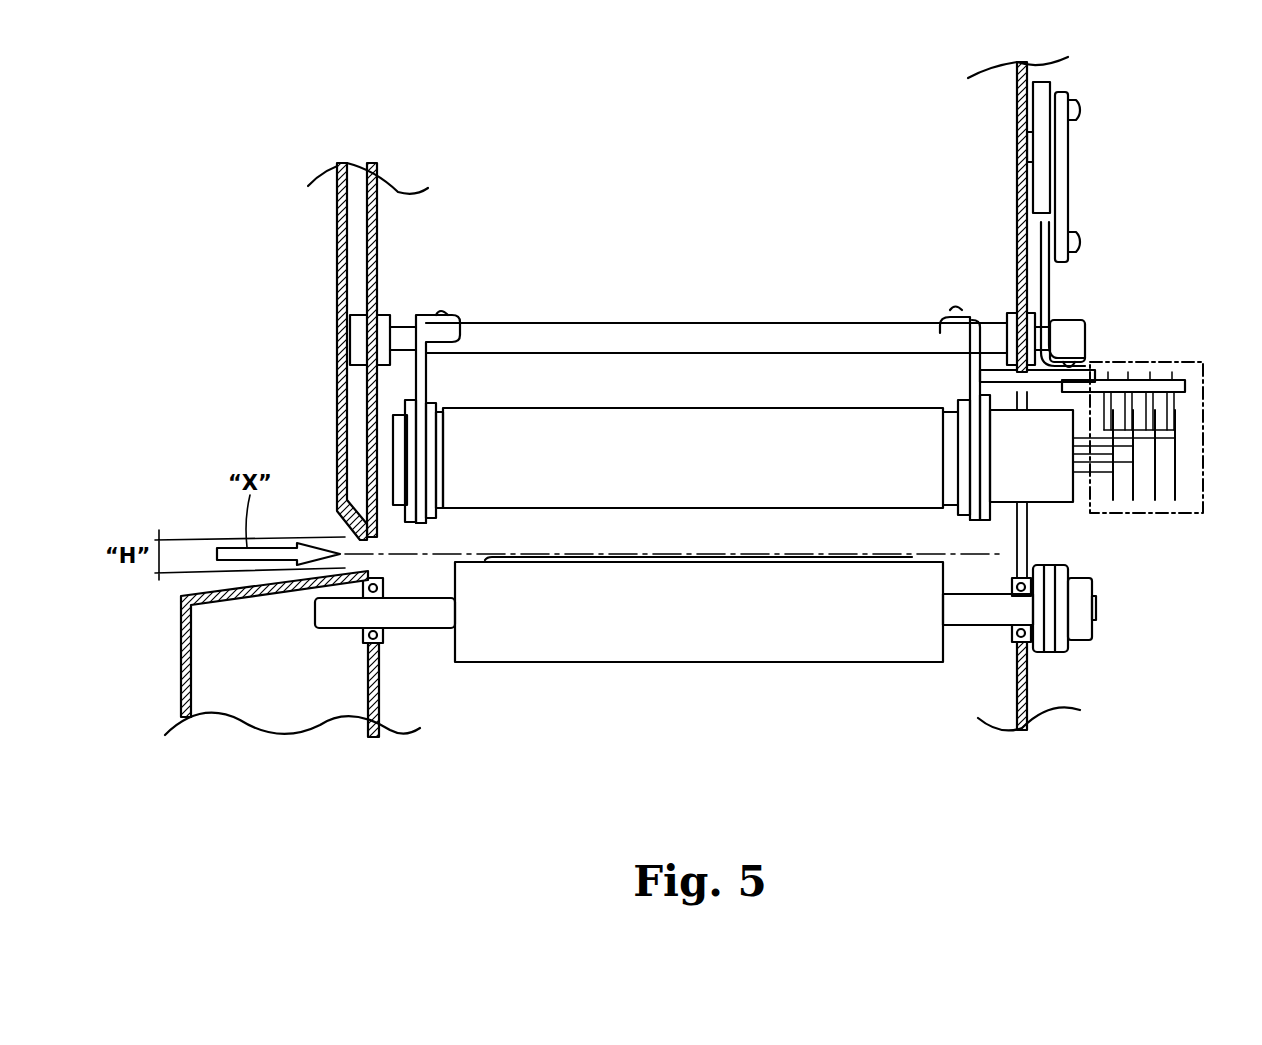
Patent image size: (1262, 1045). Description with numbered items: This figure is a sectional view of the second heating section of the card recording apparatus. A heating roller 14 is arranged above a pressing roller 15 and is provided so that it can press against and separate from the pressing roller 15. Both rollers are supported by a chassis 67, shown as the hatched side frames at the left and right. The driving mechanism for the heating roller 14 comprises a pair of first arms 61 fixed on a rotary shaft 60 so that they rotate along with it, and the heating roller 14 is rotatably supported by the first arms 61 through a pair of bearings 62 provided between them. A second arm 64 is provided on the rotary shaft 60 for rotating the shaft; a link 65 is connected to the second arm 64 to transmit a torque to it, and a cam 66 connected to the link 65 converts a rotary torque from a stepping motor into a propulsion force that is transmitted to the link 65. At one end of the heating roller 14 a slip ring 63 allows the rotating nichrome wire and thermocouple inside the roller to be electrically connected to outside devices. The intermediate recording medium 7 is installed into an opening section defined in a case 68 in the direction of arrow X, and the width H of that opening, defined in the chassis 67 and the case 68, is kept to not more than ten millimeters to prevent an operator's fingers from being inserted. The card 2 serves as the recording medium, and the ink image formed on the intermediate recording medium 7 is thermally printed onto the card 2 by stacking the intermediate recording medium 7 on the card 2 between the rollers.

The card 2 is at (538, 560).
The intermediate recording medium 7 is at (486, 554).
The heating roller 14 is at (655, 420).
The pressing roller 15 is at (640, 648).
The rotary shaft 60 is at (632, 331).
The first arm 61 is at (462, 323).
The bearing 62 is at (437, 515).
The slip ring 63 is at (1186, 362).
The second arm 64 is at (1050, 288).
The link 65 is at (1068, 178).
The cam 66 is at (1050, 85).
The chassis 67 is at (378, 249).
The case 68 is at (337, 265).